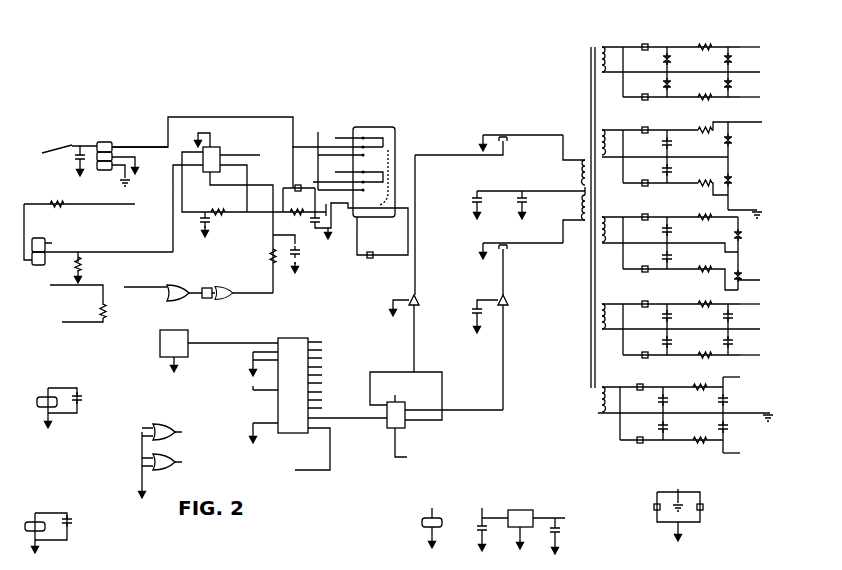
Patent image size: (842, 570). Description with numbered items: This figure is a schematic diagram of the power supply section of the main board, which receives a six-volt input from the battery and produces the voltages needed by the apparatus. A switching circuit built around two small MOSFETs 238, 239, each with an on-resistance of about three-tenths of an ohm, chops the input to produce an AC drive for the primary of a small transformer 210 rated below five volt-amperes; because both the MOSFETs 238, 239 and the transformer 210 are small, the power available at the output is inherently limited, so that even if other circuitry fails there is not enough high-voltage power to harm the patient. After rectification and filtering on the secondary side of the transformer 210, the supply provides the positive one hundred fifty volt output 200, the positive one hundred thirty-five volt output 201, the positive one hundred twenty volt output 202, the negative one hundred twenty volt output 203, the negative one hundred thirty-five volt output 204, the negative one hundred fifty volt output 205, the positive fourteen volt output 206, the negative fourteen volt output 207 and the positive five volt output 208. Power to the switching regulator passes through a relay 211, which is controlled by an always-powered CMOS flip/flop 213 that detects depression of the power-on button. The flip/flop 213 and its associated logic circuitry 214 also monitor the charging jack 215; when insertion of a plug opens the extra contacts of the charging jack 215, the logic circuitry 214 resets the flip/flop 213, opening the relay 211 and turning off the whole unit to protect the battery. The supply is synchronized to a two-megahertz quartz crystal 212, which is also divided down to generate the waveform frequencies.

The +150 volt output 200 is at (769, 49).
The +135 volt output 201 is at (770, 100).
The +120 volt output 202 is at (769, 101).
The −120 volt output 203 is at (769, 307).
The −135 volt output 204 is at (768, 305).
The −150 volt output 205 is at (769, 357).
The +14 volt output 206 is at (752, 379).
The −14 volt output 207 is at (753, 456).
The +5 volt output 208 is at (528, 527).
The transformer 210 is at (593, 214).
The relay 211 is at (354, 159).
The quartz crystal 212 is at (174, 323).
The CMOS flip/flop 213 is at (229, 152).
The logic circuitry 214 is at (220, 283).
The charging jack 215 is at (38, 204).
The MOSFET 238 is at (489, 135).
The MOSFET 239 is at (522, 259).